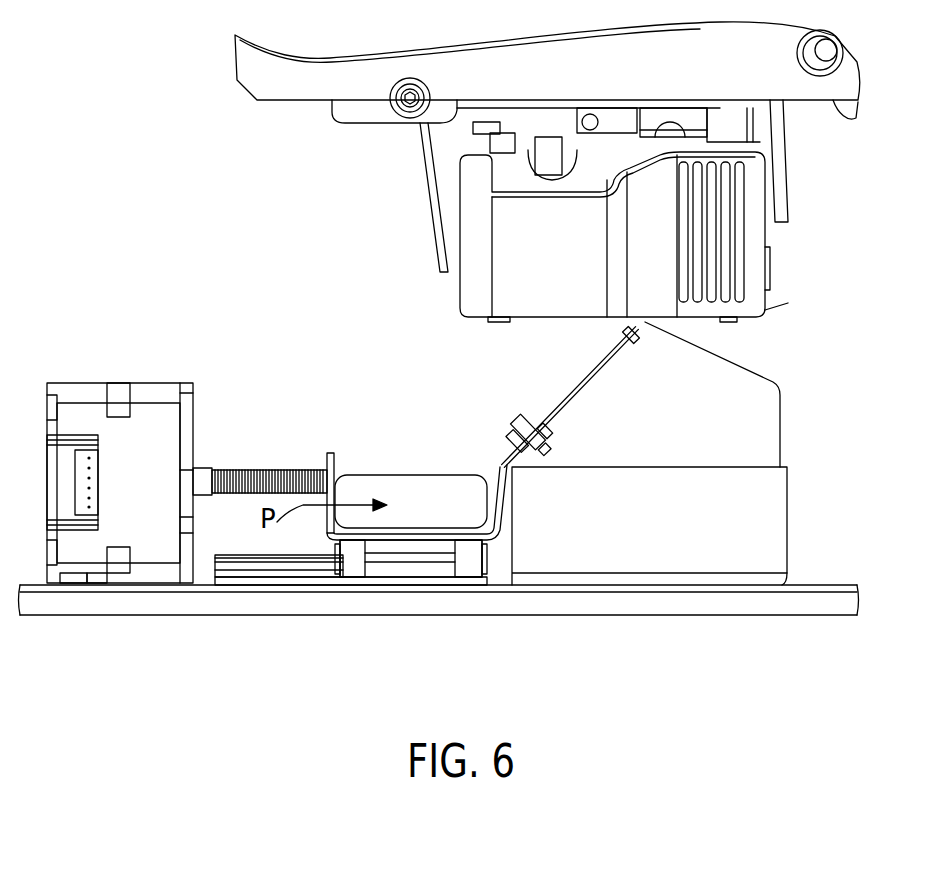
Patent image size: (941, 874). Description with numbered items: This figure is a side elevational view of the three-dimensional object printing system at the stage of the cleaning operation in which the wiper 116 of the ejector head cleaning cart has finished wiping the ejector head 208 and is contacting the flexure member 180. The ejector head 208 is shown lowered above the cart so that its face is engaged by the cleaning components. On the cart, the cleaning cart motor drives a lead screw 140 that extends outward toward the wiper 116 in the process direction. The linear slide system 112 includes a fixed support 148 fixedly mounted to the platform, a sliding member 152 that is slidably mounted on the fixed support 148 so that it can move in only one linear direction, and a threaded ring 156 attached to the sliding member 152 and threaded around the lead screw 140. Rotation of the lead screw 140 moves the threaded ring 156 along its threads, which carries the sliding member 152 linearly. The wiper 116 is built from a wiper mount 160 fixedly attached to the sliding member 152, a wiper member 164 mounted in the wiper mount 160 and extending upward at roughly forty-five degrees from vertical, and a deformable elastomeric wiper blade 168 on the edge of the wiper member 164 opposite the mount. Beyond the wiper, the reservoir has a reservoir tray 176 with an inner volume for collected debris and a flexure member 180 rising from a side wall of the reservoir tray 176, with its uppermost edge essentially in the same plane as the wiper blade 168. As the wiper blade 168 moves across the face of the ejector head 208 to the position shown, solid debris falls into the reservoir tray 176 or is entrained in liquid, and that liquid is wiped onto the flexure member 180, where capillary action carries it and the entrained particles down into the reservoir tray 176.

The linear slide system 112 is at (248, 603).
The wiper 116 is at (557, 396).
The lead screw 140 is at (285, 478).
The fixed support 148 is at (320, 577).
The sliding member 152 is at (445, 487).
The threaded ring 156 is at (341, 462).
The wiper mount 160 is at (536, 435).
The wiper member 164 is at (593, 370).
The wiper blade 168 is at (622, 333).
The reservoir tray 176 is at (776, 508).
The flexure member 180 is at (773, 382).
The ejector head 208 is at (476, 264).